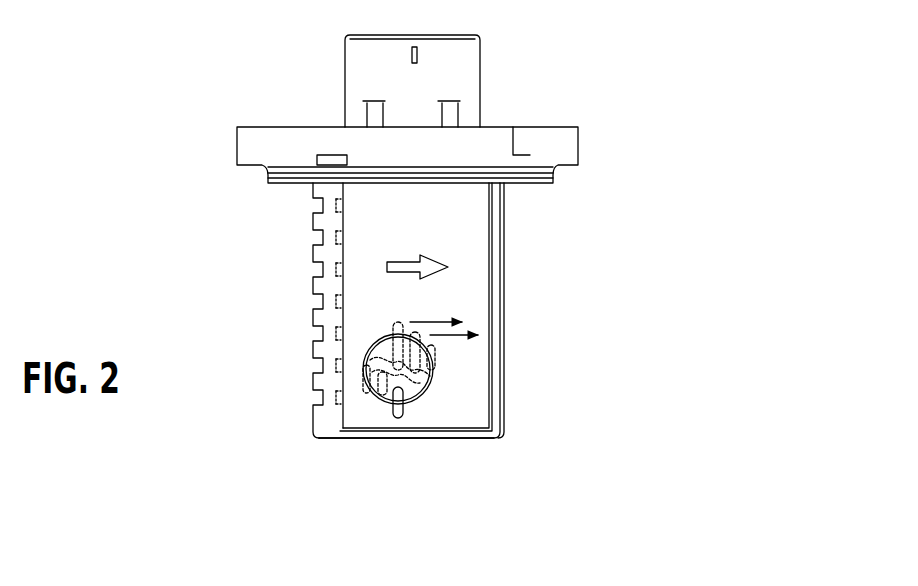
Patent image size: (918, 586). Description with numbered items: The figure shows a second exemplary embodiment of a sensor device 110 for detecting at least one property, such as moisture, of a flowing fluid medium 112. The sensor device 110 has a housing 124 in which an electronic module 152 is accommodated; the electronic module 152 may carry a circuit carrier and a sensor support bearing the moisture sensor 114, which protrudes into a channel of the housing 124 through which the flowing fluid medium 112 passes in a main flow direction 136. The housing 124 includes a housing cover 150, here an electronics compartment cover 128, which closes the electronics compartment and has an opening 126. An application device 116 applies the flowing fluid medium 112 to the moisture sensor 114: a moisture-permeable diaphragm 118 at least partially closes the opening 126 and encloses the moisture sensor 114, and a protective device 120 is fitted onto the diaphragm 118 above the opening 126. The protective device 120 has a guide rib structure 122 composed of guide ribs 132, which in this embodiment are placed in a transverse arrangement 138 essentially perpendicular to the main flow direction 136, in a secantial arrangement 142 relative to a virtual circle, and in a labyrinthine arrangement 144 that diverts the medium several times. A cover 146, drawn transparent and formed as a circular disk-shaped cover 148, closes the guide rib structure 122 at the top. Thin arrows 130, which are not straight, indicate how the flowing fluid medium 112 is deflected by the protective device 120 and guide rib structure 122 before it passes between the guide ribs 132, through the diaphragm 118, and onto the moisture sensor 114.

The sensor device 110 is at (634, 186).
The flowing fluid medium 112 is at (373, 403).
The moisture sensor 114 is at (420, 378).
The application device 116 is at (361, 338).
The diaphragm 118 is at (412, 418).
The protective device 120 is at (606, 318).
The guide rib structure 122 is at (606, 318).
The housing 124 is at (460, 285).
The opening 126 is at (365, 352).
The electronics compartment cover 128 is at (264, 306).
The thin arrows 130 is at (455, 336).
The guide rib 132 is at (606, 318).
The main flow direction 136 is at (430, 263).
The transverse arrangement 138 is at (606, 318).
The secantial arrangement 142 is at (606, 318).
The labyrinthine arrangement 144 is at (407, 317).
The cover 146 is at (486, 410).
The disk-shaped cover 148 is at (422, 400).
The housing cover 150 is at (367, 227).
The electronic module 152 is at (383, 200).